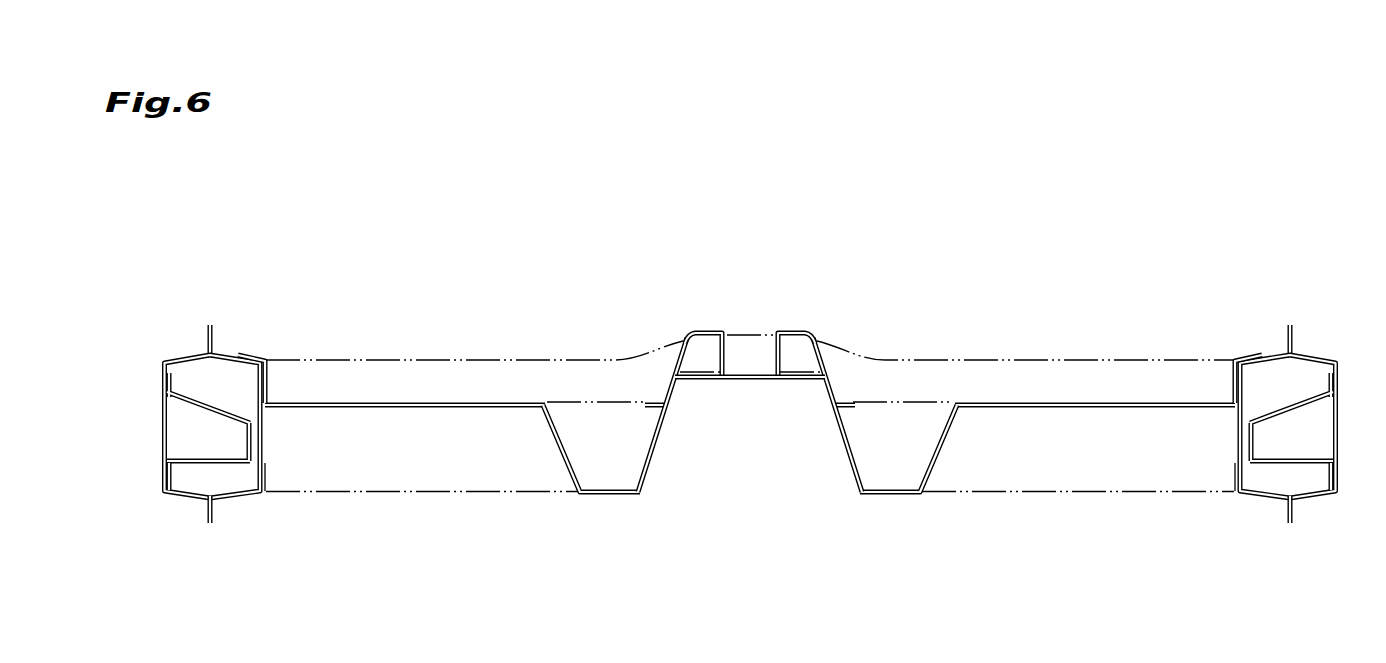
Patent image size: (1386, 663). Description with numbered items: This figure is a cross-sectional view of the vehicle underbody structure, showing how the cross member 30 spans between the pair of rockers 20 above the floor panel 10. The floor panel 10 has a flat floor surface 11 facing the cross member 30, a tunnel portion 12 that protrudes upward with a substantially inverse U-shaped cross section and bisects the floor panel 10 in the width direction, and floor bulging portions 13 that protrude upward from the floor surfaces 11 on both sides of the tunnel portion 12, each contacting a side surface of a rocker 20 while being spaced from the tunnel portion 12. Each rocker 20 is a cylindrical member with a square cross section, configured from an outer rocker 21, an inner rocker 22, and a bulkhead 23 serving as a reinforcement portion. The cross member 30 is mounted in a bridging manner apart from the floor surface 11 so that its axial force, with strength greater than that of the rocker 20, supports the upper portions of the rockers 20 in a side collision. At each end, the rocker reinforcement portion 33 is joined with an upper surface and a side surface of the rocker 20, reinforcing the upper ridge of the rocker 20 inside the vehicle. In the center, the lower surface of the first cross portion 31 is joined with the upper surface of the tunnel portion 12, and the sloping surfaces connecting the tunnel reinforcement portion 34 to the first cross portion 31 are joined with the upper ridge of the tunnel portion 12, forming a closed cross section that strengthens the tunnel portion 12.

The floor panel 10 is at (750, 408).
The floor surface 11 is at (445, 490).
The tunnel portion 12 is at (747, 381).
The floor bulging portion 13 is at (393, 409).
The rocker 20 is at (753, 406).
The outer rocker 21 is at (182, 360).
The inner rocker 22 is at (233, 498).
The bulkhead 23 is at (207, 413).
The cross member 30 is at (750, 357).
The first cross portion 31 is at (420, 358).
The rocker reinforcement portion 33 is at (253, 358).
The tunnel reinforcement portion 34 is at (665, 348).